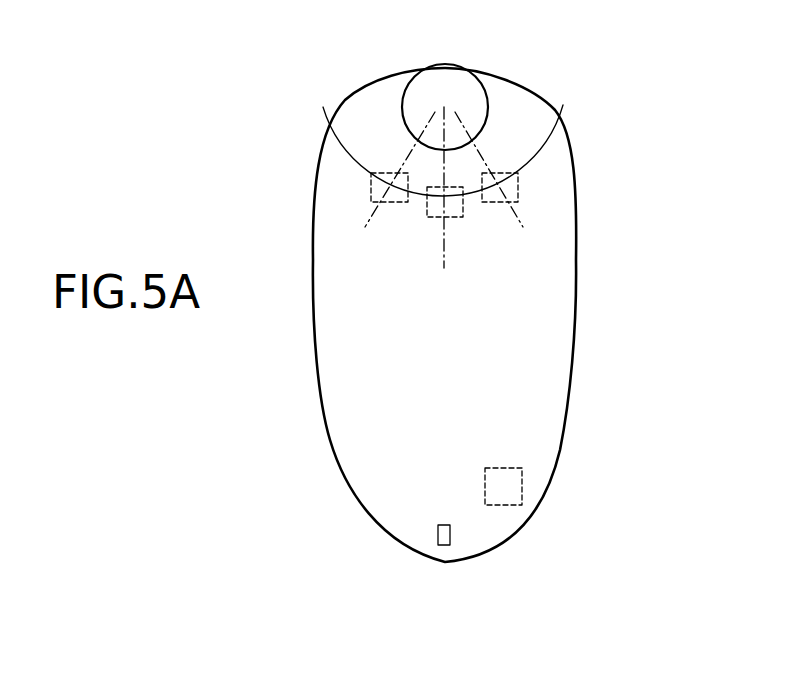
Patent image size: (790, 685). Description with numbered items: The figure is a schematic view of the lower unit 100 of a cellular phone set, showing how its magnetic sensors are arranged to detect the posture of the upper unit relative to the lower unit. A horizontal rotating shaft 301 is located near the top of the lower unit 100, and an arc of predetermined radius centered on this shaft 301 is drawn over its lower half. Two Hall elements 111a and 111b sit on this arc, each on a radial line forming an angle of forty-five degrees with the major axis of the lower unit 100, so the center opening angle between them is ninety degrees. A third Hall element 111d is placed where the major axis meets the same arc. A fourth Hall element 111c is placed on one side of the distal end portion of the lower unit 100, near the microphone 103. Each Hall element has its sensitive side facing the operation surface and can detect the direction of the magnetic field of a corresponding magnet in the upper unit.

The lower unit 100 is at (320, 425).
The horizontal rotating shaft 301 is at (446, 63).
The Hall element (magnetic sensor) 111a is at (445, 197).
The Hall element (magnetic sensor) 111b is at (445, 197).
The Hall element (magnetic sensor) 111c is at (522, 486).
The Hall element (magnetic sensor) 111d is at (463, 217).
The microphone 103 is at (444, 545).